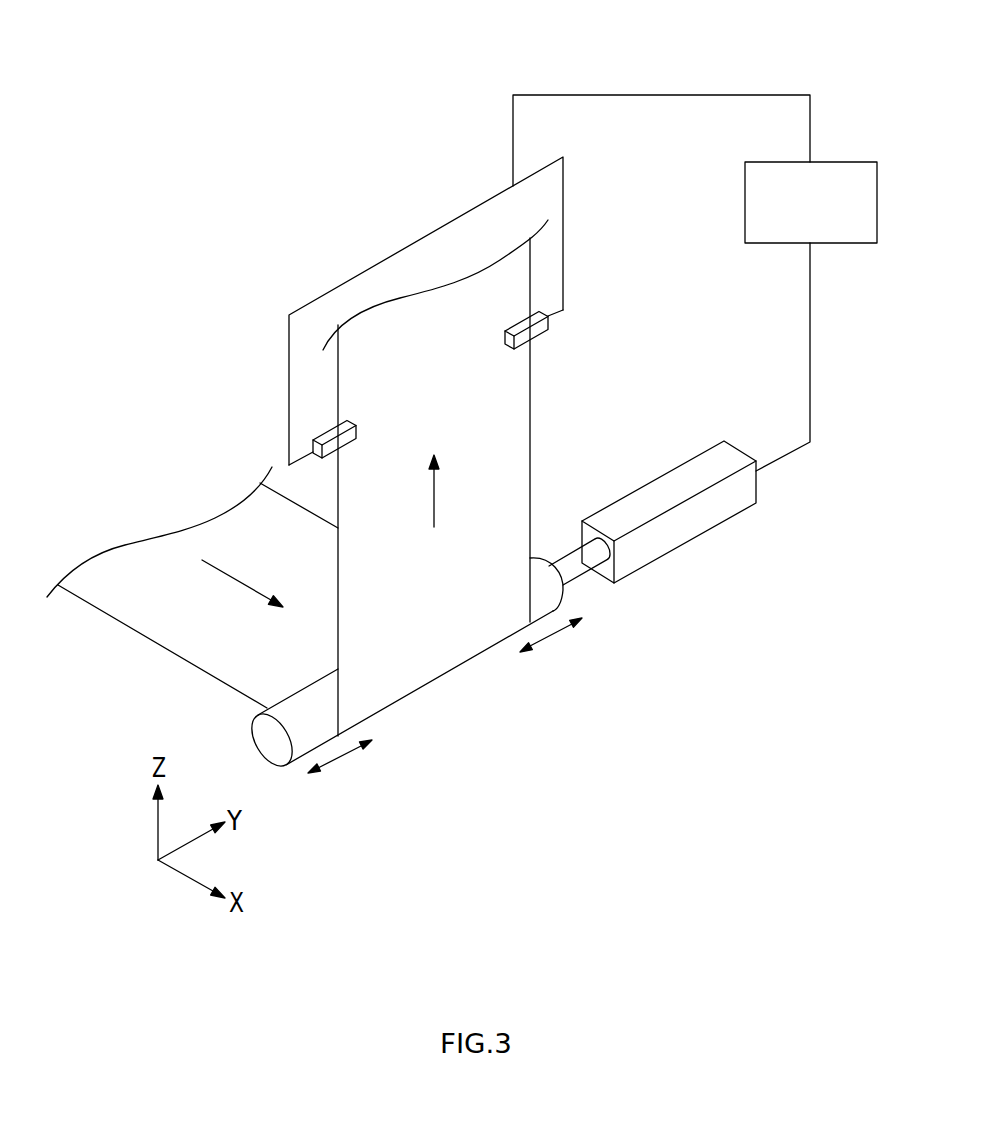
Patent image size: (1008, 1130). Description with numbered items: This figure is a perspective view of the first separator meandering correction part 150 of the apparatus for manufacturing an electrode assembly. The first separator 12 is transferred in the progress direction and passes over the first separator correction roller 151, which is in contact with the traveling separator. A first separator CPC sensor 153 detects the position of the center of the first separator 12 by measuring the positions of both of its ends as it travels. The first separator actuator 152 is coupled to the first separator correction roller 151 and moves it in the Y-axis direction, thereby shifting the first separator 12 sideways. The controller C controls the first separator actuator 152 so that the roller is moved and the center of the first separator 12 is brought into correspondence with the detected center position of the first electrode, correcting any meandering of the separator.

The first separator meandering correction part 150 is at (409, 58).
The first separator 12 is at (180, 645).
The first separator correction roller 151 is at (280, 758).
The first separator actuator 152 is at (673, 538).
The first separator CPC sensor 153 is at (355, 435).
The controller C is at (745, 200).